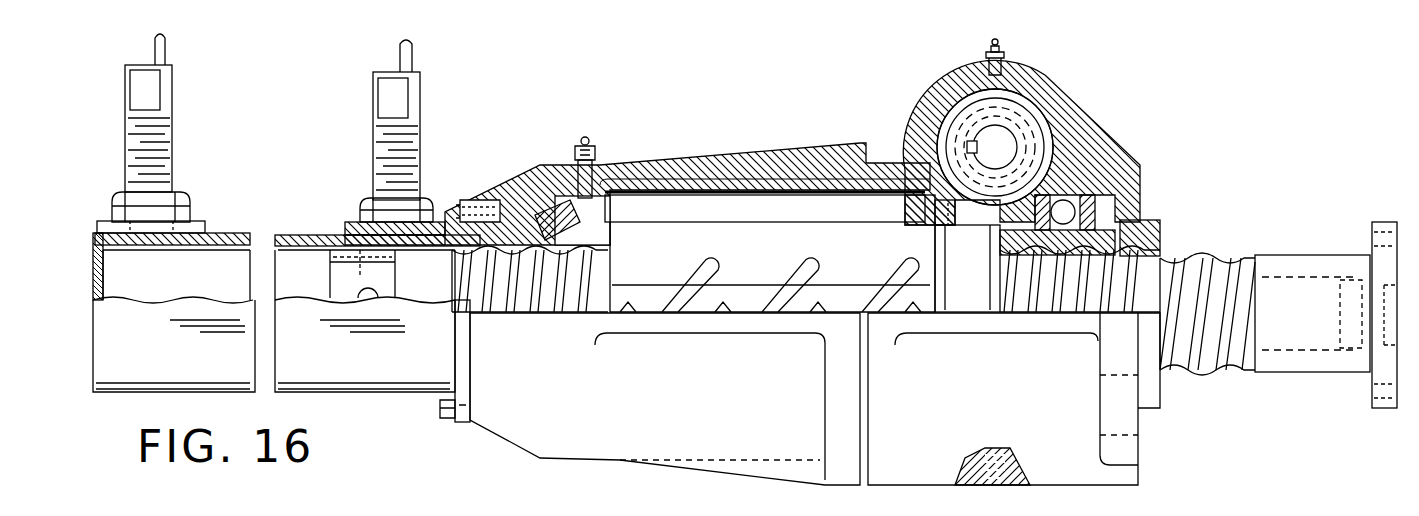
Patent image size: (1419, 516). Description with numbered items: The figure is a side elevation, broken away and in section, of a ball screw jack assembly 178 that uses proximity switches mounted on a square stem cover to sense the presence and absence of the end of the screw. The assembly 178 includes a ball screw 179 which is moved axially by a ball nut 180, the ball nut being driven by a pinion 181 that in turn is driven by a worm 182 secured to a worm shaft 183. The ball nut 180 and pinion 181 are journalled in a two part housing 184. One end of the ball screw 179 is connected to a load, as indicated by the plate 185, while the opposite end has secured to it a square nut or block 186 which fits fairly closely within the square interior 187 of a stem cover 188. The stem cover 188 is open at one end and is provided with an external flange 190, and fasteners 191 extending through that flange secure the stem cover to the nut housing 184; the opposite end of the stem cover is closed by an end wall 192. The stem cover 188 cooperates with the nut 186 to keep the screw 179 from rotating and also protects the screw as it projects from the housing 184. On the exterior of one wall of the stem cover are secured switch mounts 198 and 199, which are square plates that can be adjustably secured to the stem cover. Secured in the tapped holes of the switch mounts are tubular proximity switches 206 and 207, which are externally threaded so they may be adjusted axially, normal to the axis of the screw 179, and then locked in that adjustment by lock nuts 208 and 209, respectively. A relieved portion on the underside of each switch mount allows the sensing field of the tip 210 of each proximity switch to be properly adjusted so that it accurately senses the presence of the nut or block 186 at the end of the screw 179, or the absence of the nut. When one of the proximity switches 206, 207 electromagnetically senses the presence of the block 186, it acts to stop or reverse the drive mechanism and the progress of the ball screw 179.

The ball screw jack assembly 178 is at (1061, 147).
The ball screw 179 is at (1195, 258).
The ball nut 180 is at (710, 228).
The pinion 181 is at (968, 230).
The worm 182 is at (1052, 160).
The worm shaft 183 is at (1001, 148).
The two part housing 184 is at (750, 435).
The plate 185 is at (1395, 257).
The square nut or block 186 is at (360, 265).
The square interior 187 is at (215, 247).
The stem cover 188 is at (325, 370).
The external flange 190 is at (463, 420).
The fasteners 191 is at (505, 195).
The end wall 192 is at (100, 288).
The switch mount 198 is at (205, 226).
The switch mount 199 is at (350, 235).
The tubular proximity switch 206 is at (170, 134).
The tubular proximity switch 207 is at (418, 140).
The lock nut 208 is at (180, 194).
The lock nut 209 is at (428, 198).
The tip 210 is at (158, 245).